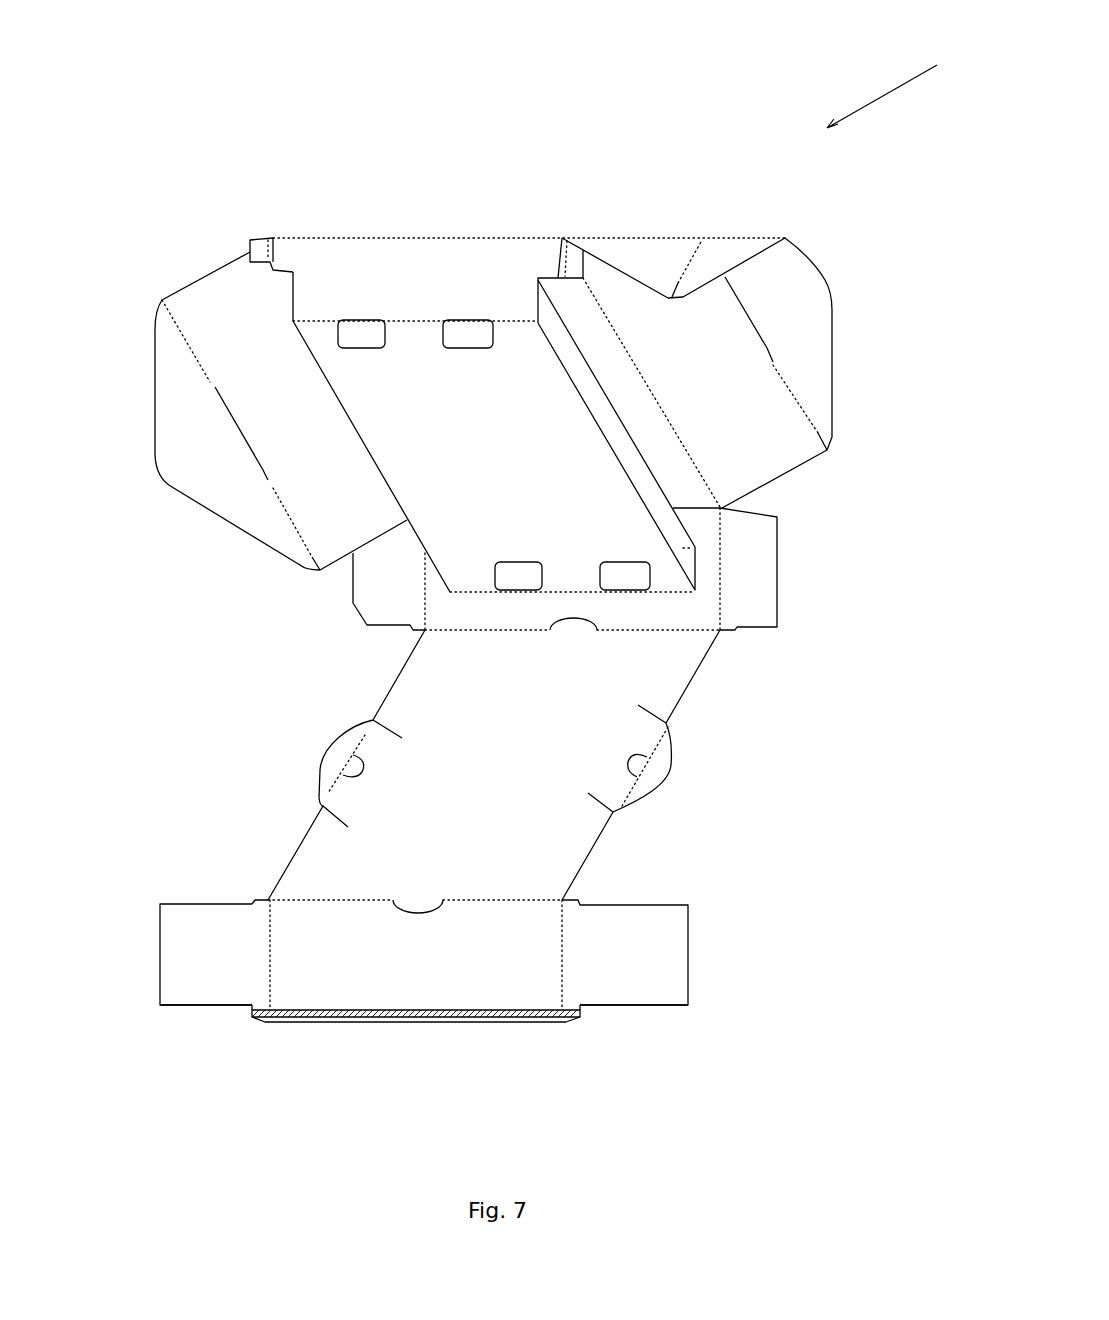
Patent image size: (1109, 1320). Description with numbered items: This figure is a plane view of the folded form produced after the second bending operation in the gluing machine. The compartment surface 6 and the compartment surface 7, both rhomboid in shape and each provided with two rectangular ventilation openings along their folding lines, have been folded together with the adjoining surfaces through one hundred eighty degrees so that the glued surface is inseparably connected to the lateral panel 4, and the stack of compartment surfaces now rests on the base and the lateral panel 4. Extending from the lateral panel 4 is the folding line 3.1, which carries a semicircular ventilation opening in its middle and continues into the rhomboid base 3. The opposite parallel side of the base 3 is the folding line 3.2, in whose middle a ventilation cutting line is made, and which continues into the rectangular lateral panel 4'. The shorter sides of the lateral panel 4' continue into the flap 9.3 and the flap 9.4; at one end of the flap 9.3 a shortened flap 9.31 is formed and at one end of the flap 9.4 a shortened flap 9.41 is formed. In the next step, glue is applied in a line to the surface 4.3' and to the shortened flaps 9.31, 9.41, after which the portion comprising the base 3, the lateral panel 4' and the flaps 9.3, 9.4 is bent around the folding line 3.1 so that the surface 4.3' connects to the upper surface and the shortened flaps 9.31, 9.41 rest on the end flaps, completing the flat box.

The compartment surface 6 is at (618, 438).
The compartment surface 7 is at (557, 485).
The lateral panel 4 is at (632, 569).
The folding line 3.1 is at (677, 630).
The base 3 is at (507, 847).
The folding line 3.2 is at (517, 900).
The lateral panel 4' is at (584, 955).
The flap 9.3 is at (623, 980).
The flap 9.4 is at (223, 963).
The shortened flap 9.41 is at (160, 1005).
The shortened flap 9.31 is at (688, 1005).
The glue surface 4.3' is at (382, 1039).